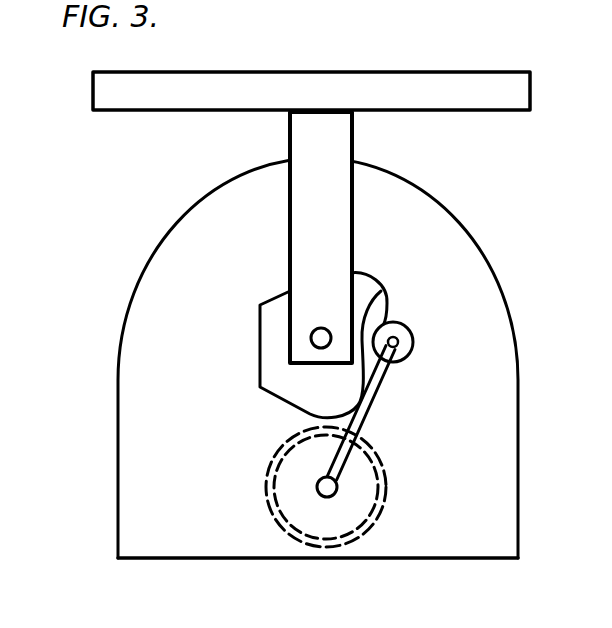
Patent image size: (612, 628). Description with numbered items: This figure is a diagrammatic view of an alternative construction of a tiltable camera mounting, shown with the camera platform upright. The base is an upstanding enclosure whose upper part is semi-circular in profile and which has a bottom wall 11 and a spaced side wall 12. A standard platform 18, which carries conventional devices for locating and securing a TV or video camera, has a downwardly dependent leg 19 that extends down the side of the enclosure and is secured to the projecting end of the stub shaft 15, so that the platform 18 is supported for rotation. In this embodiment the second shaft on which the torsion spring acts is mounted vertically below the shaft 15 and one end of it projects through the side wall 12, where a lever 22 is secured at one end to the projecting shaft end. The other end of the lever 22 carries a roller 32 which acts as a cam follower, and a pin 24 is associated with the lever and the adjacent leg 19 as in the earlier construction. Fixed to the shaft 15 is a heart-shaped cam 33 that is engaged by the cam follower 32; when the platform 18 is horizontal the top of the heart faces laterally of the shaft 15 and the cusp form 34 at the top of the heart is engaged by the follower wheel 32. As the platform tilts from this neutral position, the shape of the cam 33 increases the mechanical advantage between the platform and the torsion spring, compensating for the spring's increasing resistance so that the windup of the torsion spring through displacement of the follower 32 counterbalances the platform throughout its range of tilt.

The bottom wall 11 is at (451, 560).
The side wall 12 is at (135, 443).
The stub shaft 15 is at (311, 339).
The platform 18 is at (437, 80).
The leg 19 is at (338, 148).
The lever 22 is at (358, 426).
The pin 24 is at (317, 490).
The roller 32 is at (404, 343).
The heart-shaped cam 33 is at (272, 308).
The cusp form 34 is at (380, 292).